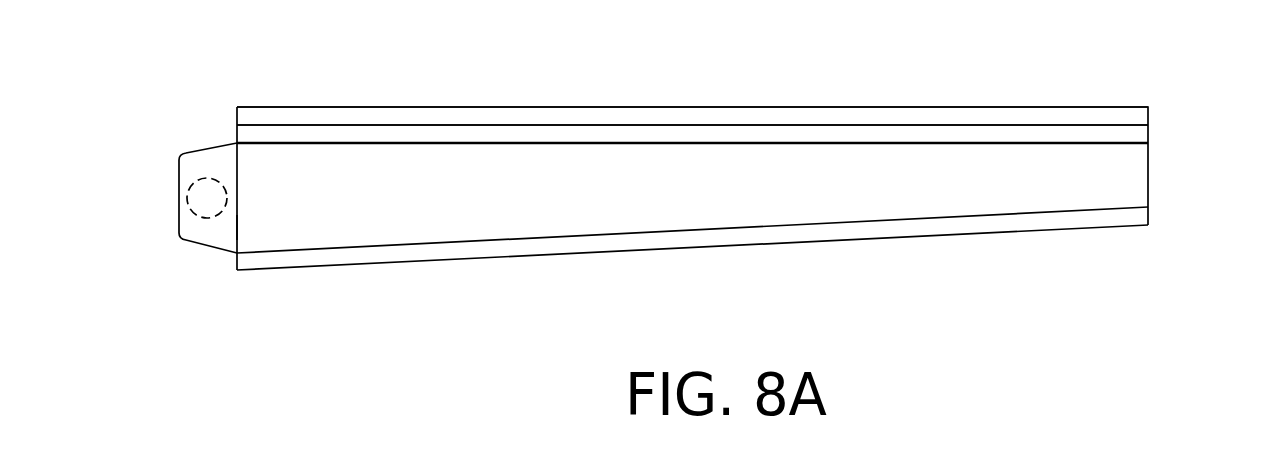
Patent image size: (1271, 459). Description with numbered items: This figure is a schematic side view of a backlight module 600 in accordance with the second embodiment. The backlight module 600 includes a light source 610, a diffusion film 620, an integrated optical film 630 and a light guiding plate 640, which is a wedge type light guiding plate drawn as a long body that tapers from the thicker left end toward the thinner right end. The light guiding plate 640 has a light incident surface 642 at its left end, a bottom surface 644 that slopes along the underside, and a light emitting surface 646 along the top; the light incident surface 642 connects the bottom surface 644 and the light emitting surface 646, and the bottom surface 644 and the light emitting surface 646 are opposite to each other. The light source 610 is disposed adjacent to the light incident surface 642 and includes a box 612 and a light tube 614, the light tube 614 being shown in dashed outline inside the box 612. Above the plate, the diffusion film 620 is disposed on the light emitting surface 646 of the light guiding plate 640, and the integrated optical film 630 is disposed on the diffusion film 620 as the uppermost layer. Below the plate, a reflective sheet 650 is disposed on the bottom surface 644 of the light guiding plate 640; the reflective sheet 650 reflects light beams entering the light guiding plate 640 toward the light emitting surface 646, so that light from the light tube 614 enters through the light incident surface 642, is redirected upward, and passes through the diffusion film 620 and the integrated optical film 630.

The backlight module 600 is at (648, 171).
The light source 610 is at (133, 178).
The box 612 is at (212, 143).
The light tube 614 is at (185, 177).
The diffusion film 620 is at (383, 133).
The integrated optical film 630 is at (1114, 115).
The light guiding plate 640 is at (1137, 173).
The light incident surface 642 is at (229, 233).
The bottom surface 644 is at (507, 246).
The light emitting surface 646 is at (926, 137).
The reflective sheet 650 is at (890, 233).